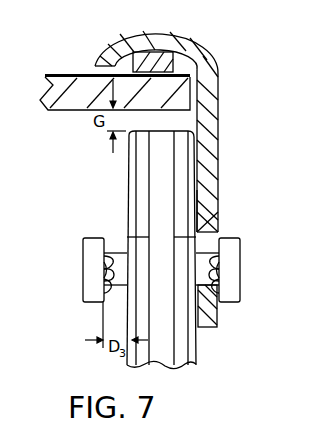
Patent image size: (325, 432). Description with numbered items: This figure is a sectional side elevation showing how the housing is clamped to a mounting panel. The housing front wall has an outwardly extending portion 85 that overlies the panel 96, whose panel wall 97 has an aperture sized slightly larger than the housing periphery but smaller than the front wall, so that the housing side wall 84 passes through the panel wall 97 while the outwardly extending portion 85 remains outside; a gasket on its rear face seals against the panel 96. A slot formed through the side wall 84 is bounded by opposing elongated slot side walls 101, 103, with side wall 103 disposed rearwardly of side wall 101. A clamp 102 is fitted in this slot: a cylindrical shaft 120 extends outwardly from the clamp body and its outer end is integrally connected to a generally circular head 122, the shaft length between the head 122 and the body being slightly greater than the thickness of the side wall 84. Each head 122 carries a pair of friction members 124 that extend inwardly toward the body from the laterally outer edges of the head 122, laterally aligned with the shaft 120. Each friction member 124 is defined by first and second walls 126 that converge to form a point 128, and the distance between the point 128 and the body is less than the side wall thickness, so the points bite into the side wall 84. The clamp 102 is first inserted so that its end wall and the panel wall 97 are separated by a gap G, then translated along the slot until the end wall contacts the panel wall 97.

The side wall 84 is at (185, 121).
The outwardly extending portion 85 is at (155, 34).
The panel 96 is at (173, 64).
The panel wall 97 is at (58, 111).
The slot side wall 101 is at (216, 208).
The clamp 102 is at (122, 171).
The slot side wall 103 is at (207, 328).
The cylindrical shaft 120 is at (112, 236).
The head 122 is at (85, 240).
The friction members 124 is at (112, 270).
The first and second walls 126 is at (106, 257).
The point 128 is at (112, 280).